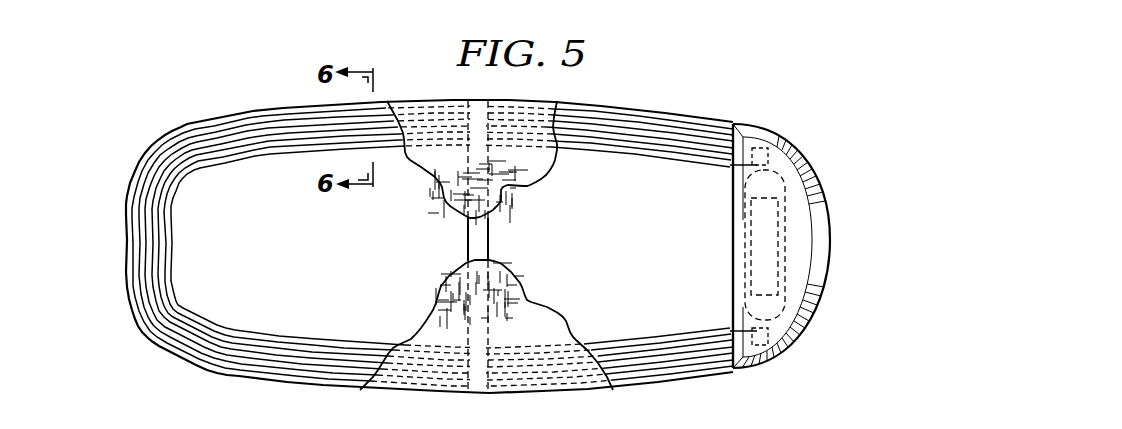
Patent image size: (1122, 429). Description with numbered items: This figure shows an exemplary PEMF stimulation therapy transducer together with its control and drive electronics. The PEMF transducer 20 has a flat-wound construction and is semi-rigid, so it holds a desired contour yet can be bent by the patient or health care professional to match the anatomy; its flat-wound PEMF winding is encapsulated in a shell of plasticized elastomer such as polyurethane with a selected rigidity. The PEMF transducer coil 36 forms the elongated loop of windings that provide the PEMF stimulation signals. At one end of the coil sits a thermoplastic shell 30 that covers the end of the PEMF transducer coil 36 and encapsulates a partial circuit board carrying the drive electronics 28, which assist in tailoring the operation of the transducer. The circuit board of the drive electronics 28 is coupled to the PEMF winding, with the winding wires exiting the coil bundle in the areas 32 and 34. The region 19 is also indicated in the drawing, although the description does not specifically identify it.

The PEMF transducer 20 is at (694, 84).
The PEMF transducer coil 36 is at (253, 157).
The junction region 19 is at (448, 273).
The thermoplastic shell 30 is at (820, 197).
The winding wire exit area 34 is at (755, 168).
The drive electronics 28 is at (743, 247).
The winding wire exit area 32 is at (755, 322).